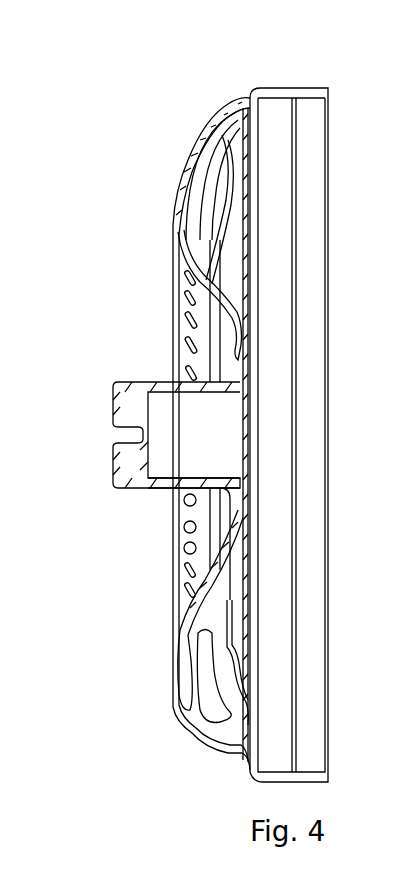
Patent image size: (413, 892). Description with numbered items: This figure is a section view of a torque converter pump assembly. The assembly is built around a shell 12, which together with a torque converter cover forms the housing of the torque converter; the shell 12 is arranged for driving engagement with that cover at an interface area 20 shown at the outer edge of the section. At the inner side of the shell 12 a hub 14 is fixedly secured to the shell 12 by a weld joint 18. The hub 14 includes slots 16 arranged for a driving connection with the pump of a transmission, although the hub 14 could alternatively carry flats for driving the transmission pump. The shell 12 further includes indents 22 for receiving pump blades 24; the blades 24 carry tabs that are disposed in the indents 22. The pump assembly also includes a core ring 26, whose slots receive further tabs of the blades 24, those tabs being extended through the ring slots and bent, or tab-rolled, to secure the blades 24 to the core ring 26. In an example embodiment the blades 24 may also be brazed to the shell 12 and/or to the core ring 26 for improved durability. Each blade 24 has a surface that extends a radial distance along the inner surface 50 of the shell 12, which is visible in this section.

The shell 12 is at (272, 88).
The hub 14 is at (162, 482).
The slots 16 is at (123, 430).
The weld joint 18 is at (235, 355).
The interface area 20 is at (328, 123).
The indents 22 is at (185, 720).
The pump blades 24 is at (222, 623).
The core ring 26 is at (238, 705).
The inner surface 50 is at (214, 736).